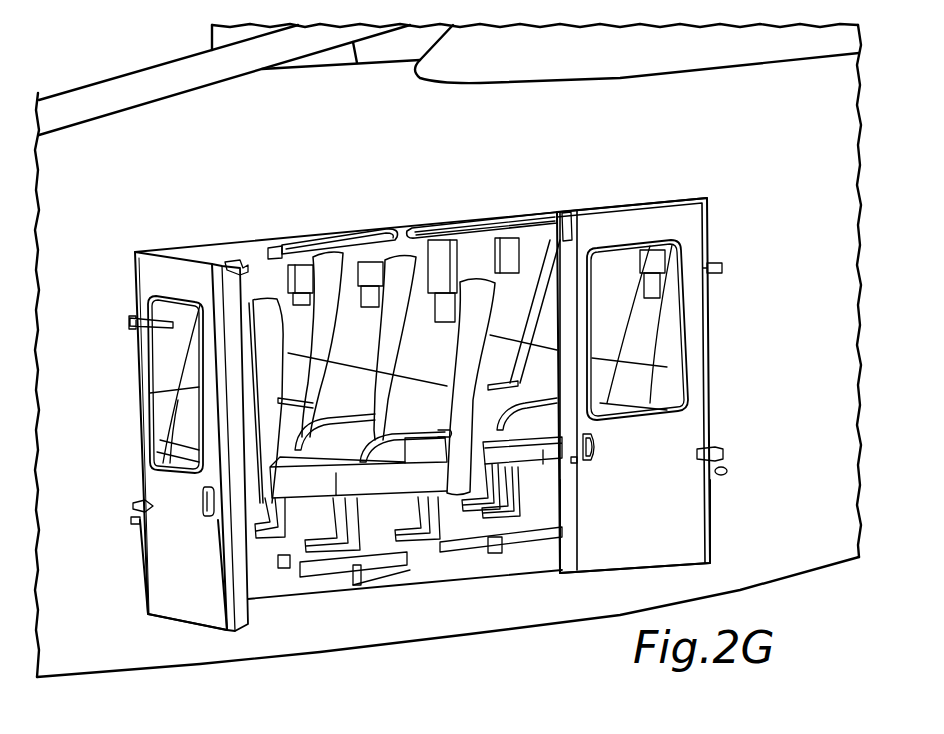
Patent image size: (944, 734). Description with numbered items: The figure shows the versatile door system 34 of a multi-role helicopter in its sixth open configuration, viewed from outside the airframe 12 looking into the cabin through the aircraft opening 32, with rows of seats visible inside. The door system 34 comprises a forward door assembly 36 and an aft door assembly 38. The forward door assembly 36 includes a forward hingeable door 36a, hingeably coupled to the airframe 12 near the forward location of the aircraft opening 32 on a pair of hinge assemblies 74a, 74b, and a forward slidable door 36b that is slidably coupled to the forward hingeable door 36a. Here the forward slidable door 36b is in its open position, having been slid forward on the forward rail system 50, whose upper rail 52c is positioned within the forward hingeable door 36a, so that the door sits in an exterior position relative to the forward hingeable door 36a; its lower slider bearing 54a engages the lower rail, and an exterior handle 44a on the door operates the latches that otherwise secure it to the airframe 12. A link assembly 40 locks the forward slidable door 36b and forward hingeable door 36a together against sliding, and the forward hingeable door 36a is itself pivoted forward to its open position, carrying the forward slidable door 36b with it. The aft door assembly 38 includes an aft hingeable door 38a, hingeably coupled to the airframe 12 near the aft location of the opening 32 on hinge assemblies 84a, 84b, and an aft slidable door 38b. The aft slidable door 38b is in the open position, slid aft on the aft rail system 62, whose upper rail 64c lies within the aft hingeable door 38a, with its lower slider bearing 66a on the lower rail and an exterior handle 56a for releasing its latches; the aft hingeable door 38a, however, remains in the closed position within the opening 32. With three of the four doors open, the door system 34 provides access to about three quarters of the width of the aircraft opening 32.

The airframe 12 is at (306, 150).
The aircraft opening 32 is at (443, 582).
The versatile door system 34 is at (614, 223).
The forward door assembly 36 is at (173, 282).
The forward hingeable door 36a is at (238, 624).
The forward slidable door 36b is at (205, 586).
The aft door assembly 38 is at (665, 223).
The aft hingeable door 38a is at (530, 230).
The aft slidable door 38b is at (672, 530).
The link assembly 40 is at (231, 272).
The exterior handle 44a is at (205, 503).
The forward rail system 50 is at (344, 231).
The upper rail 52c is at (278, 248).
The lower slider bearing 54a is at (133, 505).
The exterior handle 56a is at (600, 450).
The aft rail system 62 is at (467, 223).
The upper rail 64c is at (565, 217).
The lower slider bearing 66a is at (700, 455).
The hinge assembly 74a is at (135, 520).
The hinge assembly 74b is at (130, 320).
The hinge assembly 84a is at (727, 474).
The hinge assembly 84b is at (724, 268).